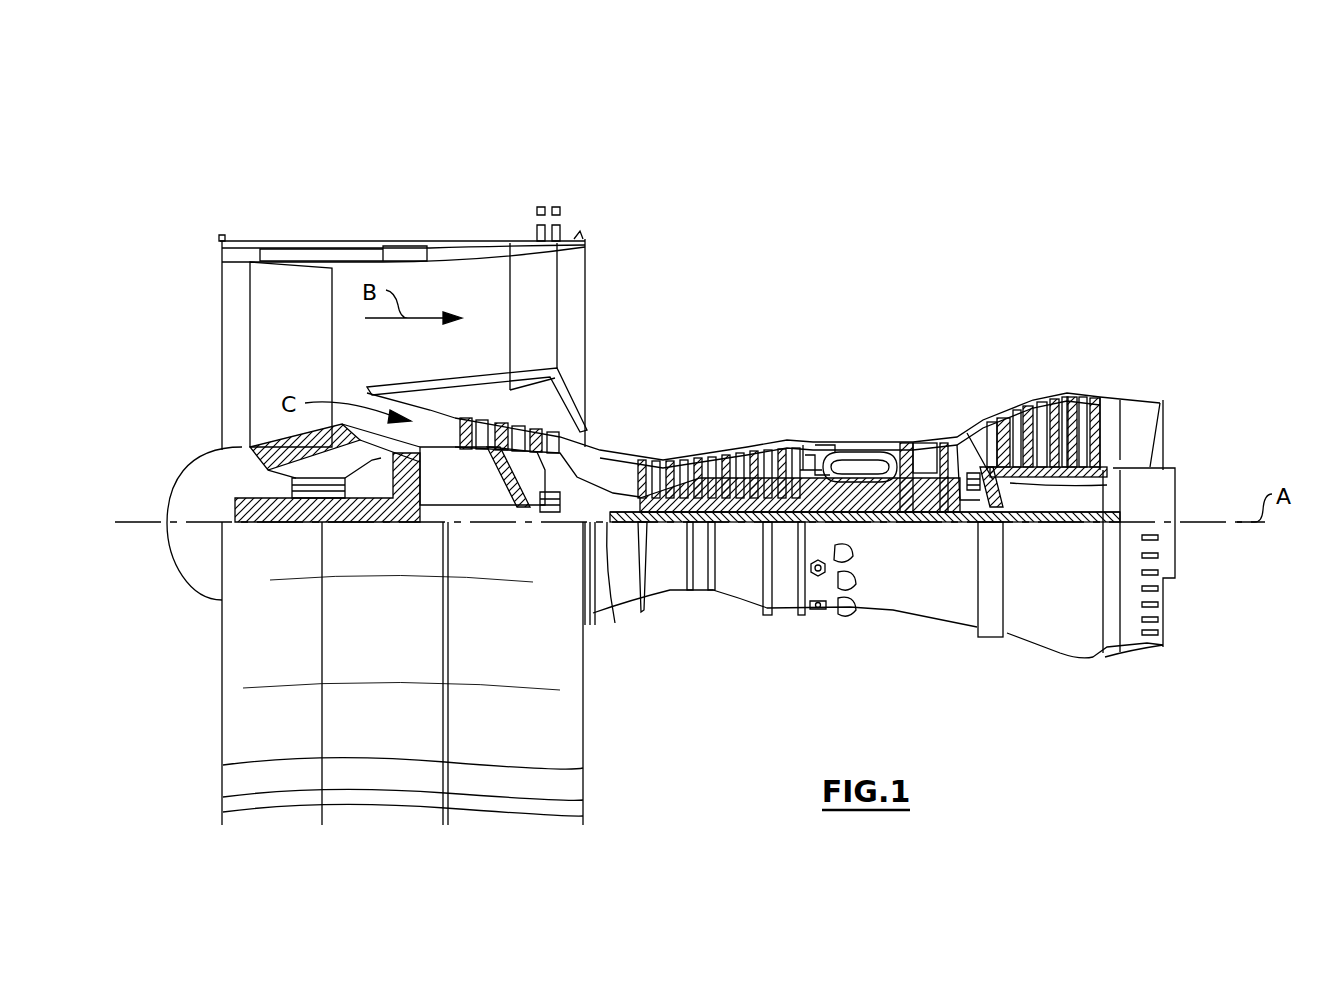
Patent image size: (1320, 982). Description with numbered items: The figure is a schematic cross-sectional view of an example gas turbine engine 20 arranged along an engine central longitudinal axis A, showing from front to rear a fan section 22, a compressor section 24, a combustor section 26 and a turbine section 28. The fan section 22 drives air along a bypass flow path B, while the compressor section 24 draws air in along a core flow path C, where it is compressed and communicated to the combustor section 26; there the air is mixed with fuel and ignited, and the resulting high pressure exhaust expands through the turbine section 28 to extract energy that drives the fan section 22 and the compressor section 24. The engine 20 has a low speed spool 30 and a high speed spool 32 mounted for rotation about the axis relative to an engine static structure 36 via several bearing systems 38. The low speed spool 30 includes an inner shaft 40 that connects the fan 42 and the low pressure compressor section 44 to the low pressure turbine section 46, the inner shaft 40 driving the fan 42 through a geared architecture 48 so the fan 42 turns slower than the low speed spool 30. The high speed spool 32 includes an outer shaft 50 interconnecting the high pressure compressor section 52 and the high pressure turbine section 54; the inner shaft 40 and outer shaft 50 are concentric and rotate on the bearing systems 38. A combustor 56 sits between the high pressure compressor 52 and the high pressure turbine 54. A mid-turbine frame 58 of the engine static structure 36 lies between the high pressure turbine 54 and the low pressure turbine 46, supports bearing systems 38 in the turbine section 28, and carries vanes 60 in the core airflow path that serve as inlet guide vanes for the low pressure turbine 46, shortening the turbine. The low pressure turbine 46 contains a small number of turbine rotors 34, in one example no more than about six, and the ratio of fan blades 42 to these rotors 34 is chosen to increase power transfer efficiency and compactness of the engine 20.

The gas turbine engine 20 is at (868, 285).
The fan section 22 is at (428, 216).
The compressor section 24 is at (443, 360).
The combustor section 26 is at (895, 360).
The turbine section 28 is at (1118, 360).
The low speed spool 30 is at (740, 535).
The high speed spool 32 is at (785, 490).
The turbine rotors 34 is at (1087, 483).
The engine static structure 36 is at (779, 620).
The bearing systems 38 is at (296, 522).
The inner shaft 40 is at (613, 560).
The fan 42 is at (305, 365).
The low pressure compressor section 44 is at (533, 422).
The low pressure turbine section 46 is at (1050, 412).
The geared architecture 48 is at (407, 510).
The outer shaft 50 is at (873, 508).
The high pressure compressor section 52 is at (710, 456).
The high pressure turbine section 54 is at (921, 442).
The combustor 56 is at (857, 467).
The mid-turbine frame 58 is at (968, 425).
The vanes 60 is at (993, 455).